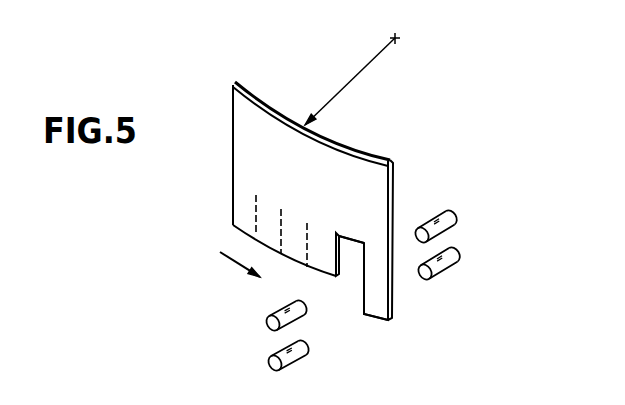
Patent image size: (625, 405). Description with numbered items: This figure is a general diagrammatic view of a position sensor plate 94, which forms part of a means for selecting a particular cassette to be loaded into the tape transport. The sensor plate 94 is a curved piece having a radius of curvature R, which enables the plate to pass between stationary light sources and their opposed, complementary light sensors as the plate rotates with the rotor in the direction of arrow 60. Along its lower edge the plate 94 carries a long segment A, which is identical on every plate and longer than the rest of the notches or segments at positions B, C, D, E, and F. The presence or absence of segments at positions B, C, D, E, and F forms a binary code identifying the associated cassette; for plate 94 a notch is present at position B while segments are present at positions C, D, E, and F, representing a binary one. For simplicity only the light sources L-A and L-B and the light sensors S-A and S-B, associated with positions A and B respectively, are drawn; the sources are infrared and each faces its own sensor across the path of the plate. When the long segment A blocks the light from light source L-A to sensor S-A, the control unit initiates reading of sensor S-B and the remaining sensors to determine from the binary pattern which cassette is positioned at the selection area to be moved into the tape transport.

The sensor plate 94 is at (349, 201).
The arrow indicating direction of rotor rotation 60 is at (230, 262).
The radius of curvature R is at (343, 87).
The light source for position A L-A is at (462, 255).
The light source for position B L-B is at (458, 218).
The light sensor for position A S-A is at (267, 363).
The light sensor for position B S-B is at (265, 323).
The long segment A is at (376, 243).
The position B is at (346, 233).
The position C is at (317, 245).
The position D is at (298, 245).
The position E is at (273, 231).
The position F is at (248, 215).